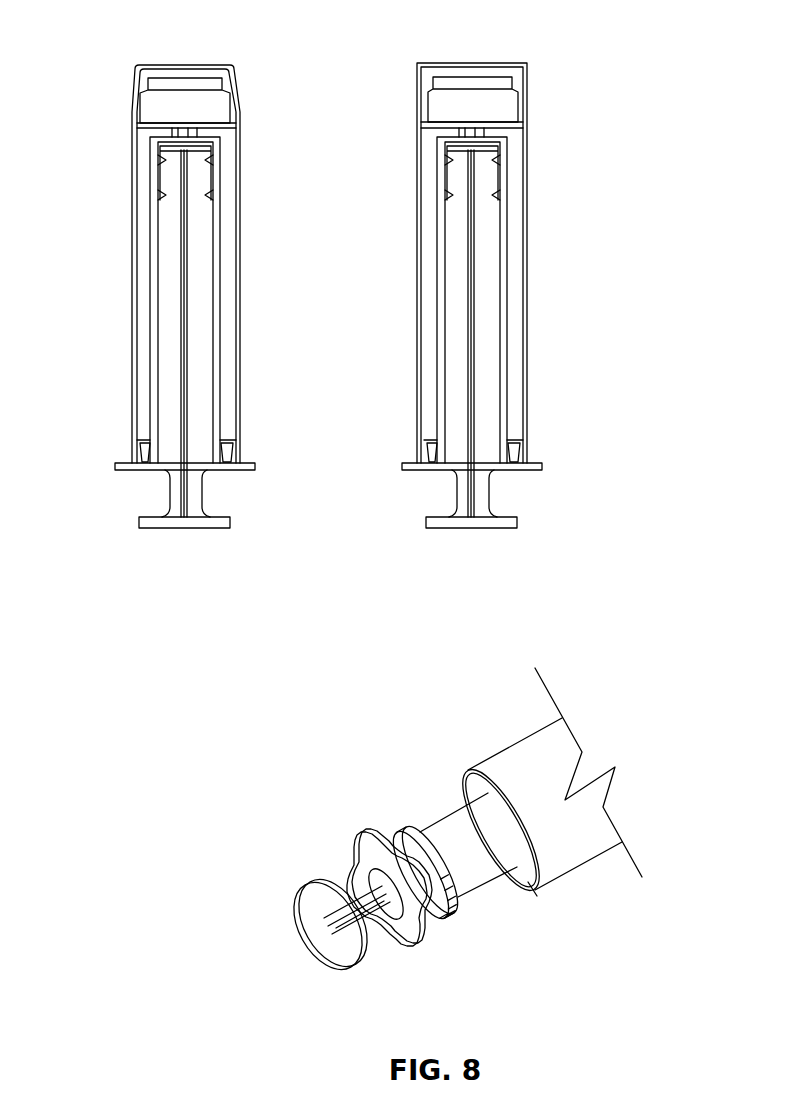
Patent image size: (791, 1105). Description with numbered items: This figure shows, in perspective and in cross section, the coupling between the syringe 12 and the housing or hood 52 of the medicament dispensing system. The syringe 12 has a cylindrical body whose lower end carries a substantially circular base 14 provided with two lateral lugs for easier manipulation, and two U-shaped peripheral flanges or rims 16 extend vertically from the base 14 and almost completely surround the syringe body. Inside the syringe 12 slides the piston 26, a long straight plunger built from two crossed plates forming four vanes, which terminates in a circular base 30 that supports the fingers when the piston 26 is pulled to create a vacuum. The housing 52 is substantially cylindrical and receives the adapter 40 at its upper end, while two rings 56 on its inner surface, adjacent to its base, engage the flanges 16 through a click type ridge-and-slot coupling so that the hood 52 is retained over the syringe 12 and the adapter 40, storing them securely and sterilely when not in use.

The syringe 12 is at (223, 188).
The base 14 is at (357, 848).
The peripheral flanges or rims 16 is at (245, 470).
The piston 26 is at (180, 258).
The circular base 30 is at (183, 530).
The adapter 40 is at (190, 101).
The housing or hood 52 is at (240, 287).
The rings 56 is at (137, 432).